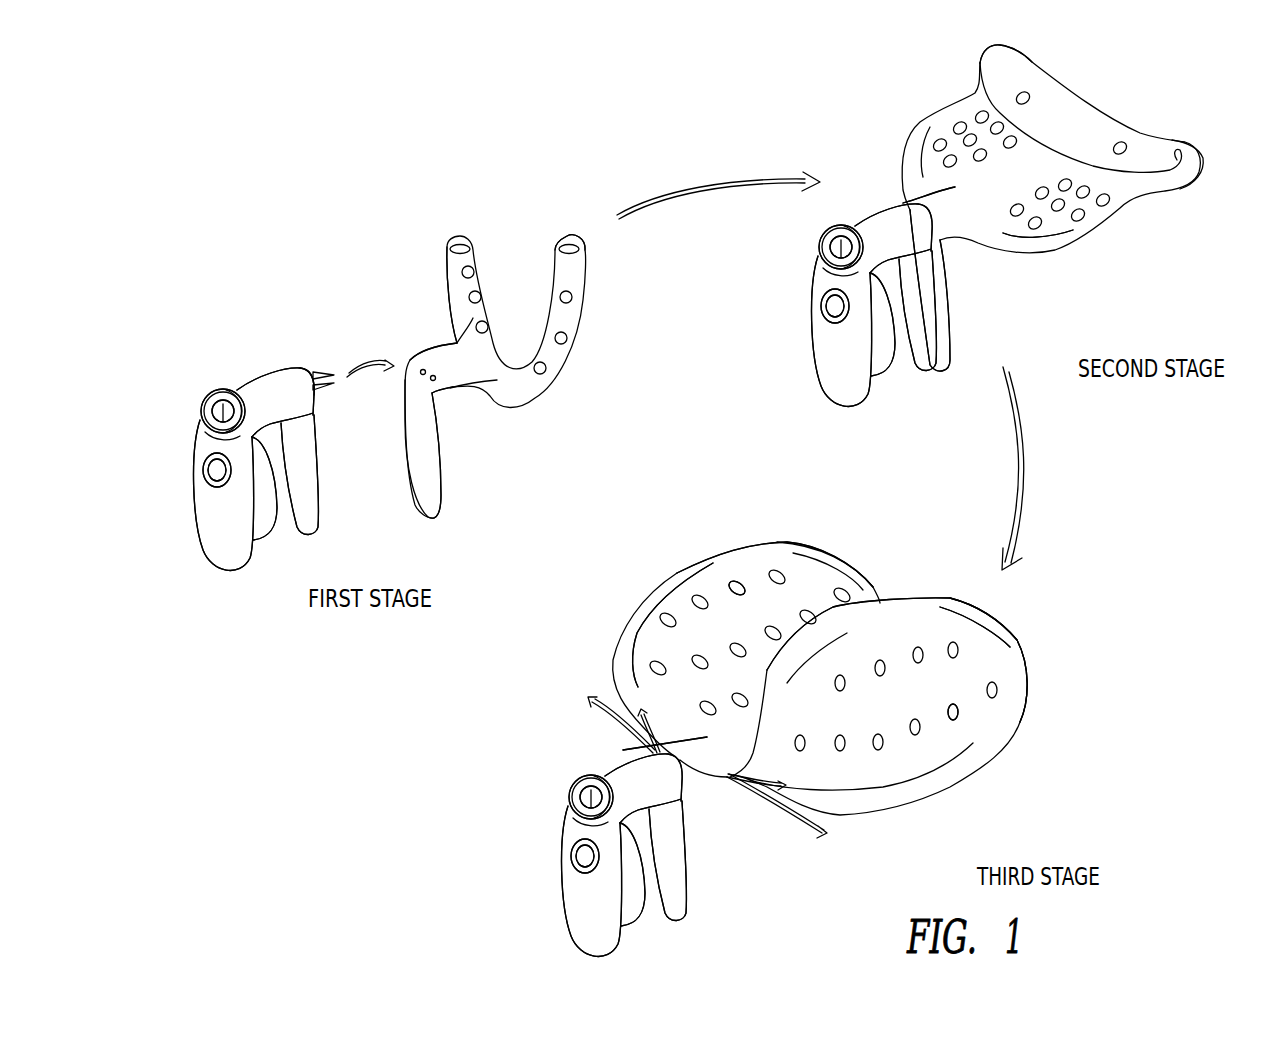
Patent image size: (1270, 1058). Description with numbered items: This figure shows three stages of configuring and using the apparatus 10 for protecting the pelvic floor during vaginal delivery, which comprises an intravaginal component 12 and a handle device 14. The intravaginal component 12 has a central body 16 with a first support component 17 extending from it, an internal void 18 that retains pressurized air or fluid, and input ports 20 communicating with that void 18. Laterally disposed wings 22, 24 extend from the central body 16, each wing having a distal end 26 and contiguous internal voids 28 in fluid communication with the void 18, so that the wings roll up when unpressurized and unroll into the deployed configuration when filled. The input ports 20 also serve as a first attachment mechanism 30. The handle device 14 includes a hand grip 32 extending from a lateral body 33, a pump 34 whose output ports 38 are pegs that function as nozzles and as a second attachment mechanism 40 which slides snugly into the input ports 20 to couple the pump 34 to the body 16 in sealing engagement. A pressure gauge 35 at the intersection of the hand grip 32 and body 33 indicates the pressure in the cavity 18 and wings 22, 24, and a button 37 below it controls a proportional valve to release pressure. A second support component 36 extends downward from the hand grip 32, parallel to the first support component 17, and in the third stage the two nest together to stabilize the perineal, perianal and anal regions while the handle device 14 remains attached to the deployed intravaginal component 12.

The apparatus 10 is at (670, 525).
The intravaginal component 12 is at (920, 115).
The handle device 14 is at (192, 430).
The central body 16 is at (450, 343).
The first support component 17 is at (423, 493).
The internal void 18 is at (992, 195).
The input ports 20 is at (443, 395).
The wing 22 is at (450, 238).
The wing 24 is at (563, 238).
The distal end 26 is at (715, 562).
The internal voids 28 is at (712, 581).
The first attachment mechanism 30 is at (413, 357).
The hand grip 32 is at (210, 553).
The lateral body 33 is at (250, 390).
The pump 34 is at (260, 507).
The pressure gauge 35 is at (207, 392).
The second support component 36 is at (296, 510).
The button 37 is at (202, 470).
The output ports 38 is at (332, 395).
The second attachment mechanism 40 is at (303, 363).